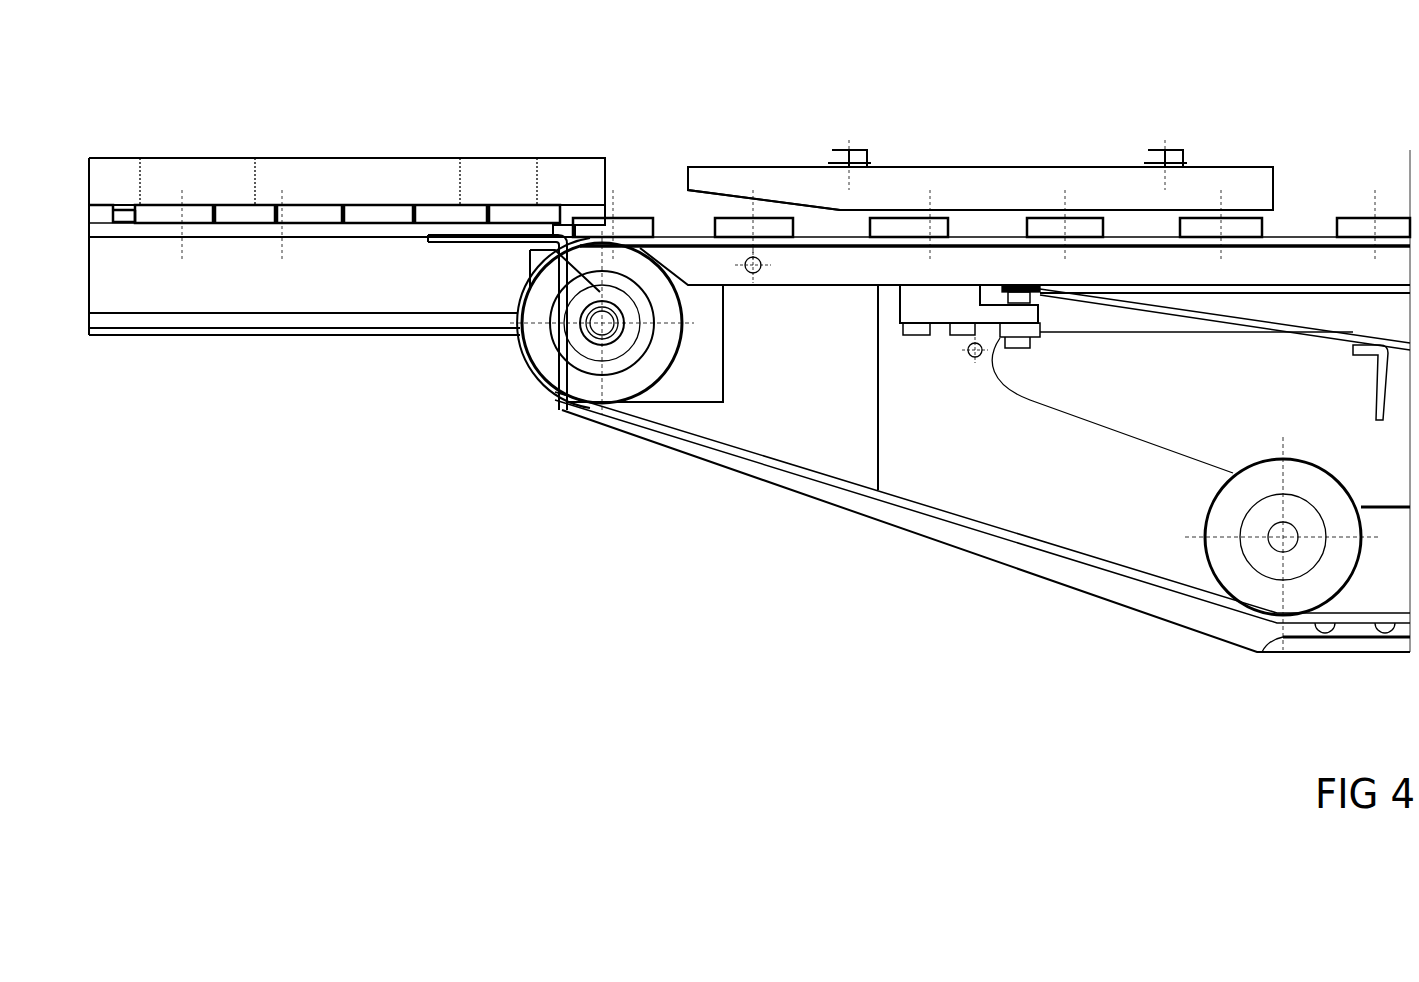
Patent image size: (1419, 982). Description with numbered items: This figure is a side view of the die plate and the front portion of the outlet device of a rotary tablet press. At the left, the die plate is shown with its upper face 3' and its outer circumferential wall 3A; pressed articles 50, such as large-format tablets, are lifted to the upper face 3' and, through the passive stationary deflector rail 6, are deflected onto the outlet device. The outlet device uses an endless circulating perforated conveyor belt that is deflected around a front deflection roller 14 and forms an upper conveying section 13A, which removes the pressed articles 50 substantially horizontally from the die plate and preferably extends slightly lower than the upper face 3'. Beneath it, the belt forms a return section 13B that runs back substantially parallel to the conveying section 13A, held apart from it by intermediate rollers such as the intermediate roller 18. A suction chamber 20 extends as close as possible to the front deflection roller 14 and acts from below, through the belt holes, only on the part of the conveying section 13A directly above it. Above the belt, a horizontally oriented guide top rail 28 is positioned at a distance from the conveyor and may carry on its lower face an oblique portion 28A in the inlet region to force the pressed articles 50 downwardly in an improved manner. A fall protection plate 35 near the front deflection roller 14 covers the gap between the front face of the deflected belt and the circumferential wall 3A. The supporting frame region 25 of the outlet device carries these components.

The outer circumferential wall 3A is at (198, 290).
The deflector rail 6 is at (238, 188).
The upper face of the die plate 3' is at (324, 156).
The pressed articles 50 is at (318, 215).
The fall protection plate 35 is at (478, 245).
The front deflection roller 14 is at (650, 355).
The conveying section 13A is at (1320, 240).
The guide top rail 28 is at (960, 190).
The oblique portion 28A is at (740, 198).
The frame body 25 is at (803, 392).
The suction chamber 20 is at (1318, 320).
The return section 13B is at (938, 515).
The intermediate roller 18 is at (1277, 552).